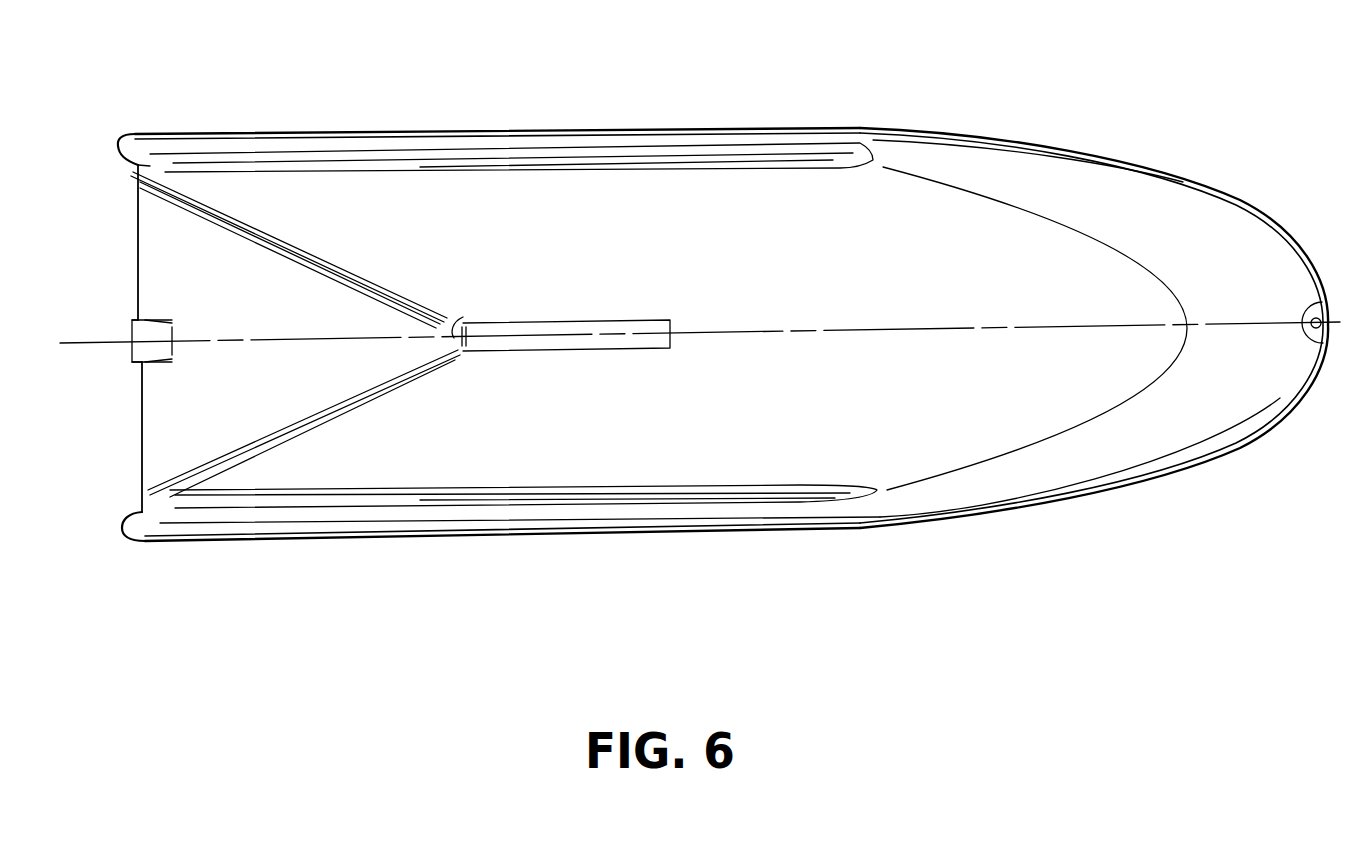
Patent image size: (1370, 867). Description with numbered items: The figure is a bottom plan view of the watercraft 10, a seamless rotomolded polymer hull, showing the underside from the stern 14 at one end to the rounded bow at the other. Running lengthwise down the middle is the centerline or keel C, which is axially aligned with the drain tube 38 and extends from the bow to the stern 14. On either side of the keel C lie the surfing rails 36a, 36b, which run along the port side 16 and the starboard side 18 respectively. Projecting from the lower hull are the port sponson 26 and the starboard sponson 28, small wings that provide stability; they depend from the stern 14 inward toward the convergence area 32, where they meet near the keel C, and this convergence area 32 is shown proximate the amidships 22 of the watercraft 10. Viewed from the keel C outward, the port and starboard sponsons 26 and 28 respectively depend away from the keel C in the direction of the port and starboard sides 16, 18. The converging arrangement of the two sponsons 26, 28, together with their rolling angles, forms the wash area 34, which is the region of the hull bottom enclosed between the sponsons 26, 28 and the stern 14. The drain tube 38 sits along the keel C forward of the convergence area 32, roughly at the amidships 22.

The watercraft 10 is at (507, 115).
The starboard side 18 is at (708, 128).
The port side 16 is at (655, 535).
The surfing rail 36b is at (567, 157).
The surfing rail 36a is at (472, 500).
The amidships 22 is at (830, 306).
The stern 14 is at (180, 417).
The keel C is at (98, 342).
The starboard sponson 28 is at (235, 222).
The port sponson 26 is at (258, 445).
The convergence area 32 is at (453, 337).
The drain tube 38 is at (637, 338).
The wash area 34 is at (279, 389).